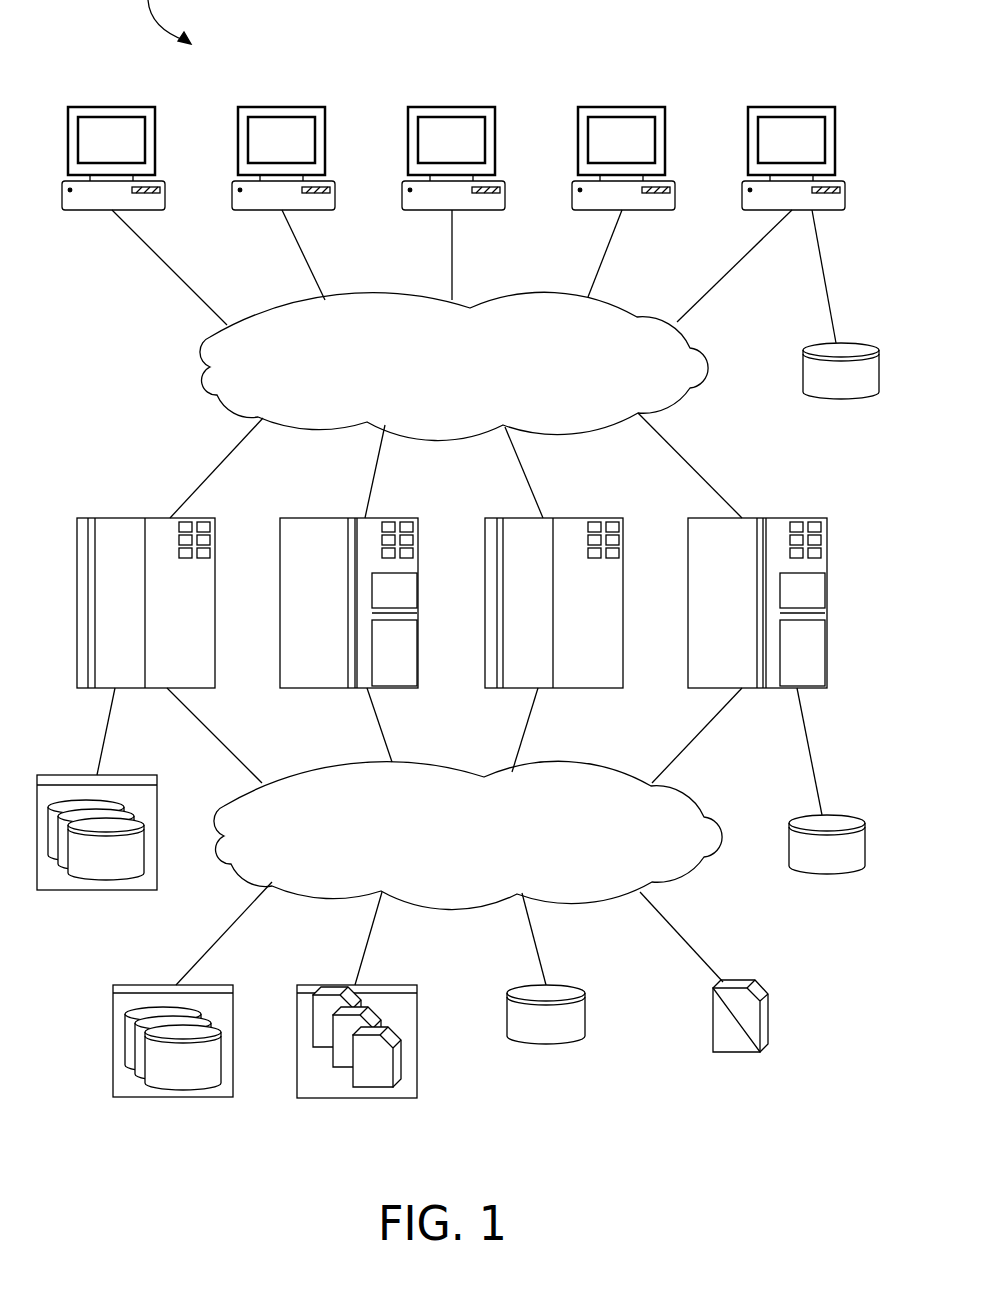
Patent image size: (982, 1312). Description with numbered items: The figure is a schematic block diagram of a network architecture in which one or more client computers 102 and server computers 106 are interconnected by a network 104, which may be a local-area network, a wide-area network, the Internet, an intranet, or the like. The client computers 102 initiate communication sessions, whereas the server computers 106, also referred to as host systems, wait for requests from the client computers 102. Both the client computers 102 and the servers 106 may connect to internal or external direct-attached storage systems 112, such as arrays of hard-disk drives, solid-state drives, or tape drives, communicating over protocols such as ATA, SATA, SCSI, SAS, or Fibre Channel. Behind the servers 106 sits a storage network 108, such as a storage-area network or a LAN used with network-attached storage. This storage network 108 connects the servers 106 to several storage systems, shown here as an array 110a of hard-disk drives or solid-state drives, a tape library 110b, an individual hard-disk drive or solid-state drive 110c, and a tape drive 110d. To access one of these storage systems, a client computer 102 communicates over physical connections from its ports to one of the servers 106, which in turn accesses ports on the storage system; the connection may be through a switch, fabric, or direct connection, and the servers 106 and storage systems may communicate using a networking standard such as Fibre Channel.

The client computers 102 is at (99, 149).
The network 104 is at (441, 403).
The server computers 106 is at (105, 608).
The storage network 108 is at (456, 876).
The arrays of hard-disk drives or solid-state drives 110a is at (170, 1100).
The tape libraries 110b is at (355, 1100).
The individual hard-disk drives or solid-state drives 110c is at (546, 1047).
The tape drives 110d is at (736, 1055).
The direct-attached storage systems 112 is at (841, 400).